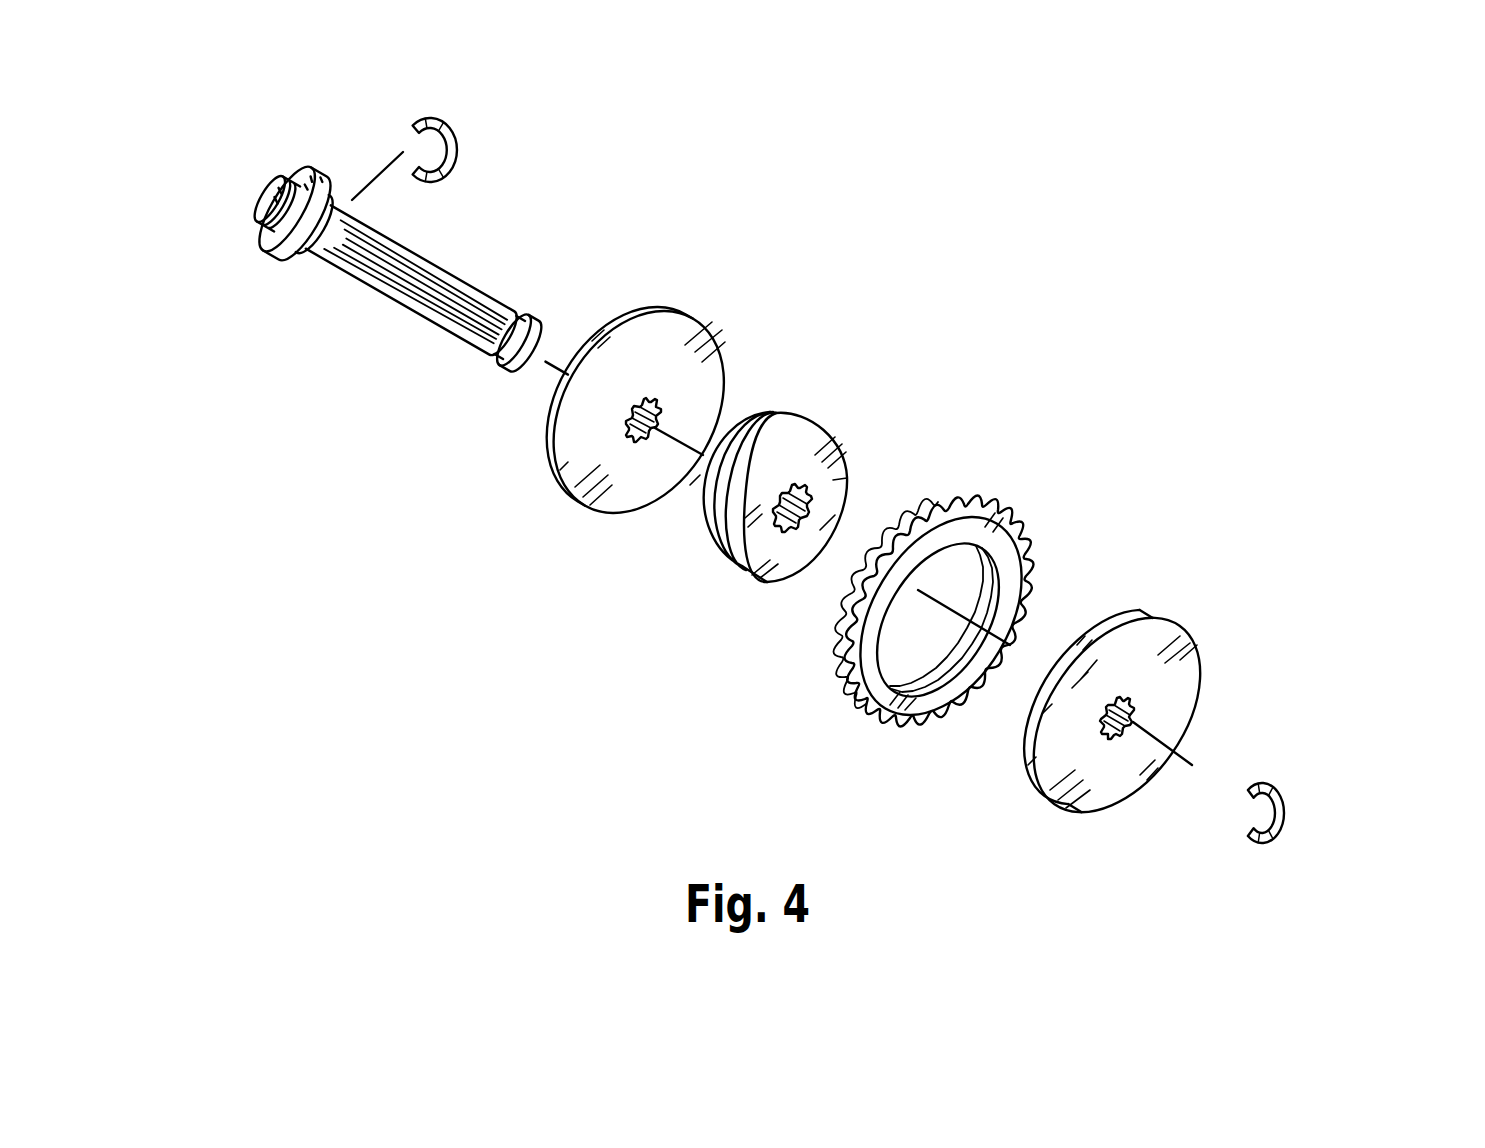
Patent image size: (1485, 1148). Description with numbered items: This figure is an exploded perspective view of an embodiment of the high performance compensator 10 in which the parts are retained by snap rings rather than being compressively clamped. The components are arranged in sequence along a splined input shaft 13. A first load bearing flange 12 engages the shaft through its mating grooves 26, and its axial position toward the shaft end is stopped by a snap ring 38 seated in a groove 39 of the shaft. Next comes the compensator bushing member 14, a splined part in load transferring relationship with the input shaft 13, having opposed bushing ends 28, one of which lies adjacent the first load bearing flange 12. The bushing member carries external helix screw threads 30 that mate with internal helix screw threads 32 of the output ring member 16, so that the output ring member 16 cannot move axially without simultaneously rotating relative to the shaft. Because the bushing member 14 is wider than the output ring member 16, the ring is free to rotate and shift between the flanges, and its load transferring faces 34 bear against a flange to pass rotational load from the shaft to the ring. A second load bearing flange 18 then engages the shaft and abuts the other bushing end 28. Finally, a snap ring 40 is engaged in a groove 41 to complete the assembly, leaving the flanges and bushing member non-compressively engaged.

The high performance compensator 10 is at (1264, 354).
The first load bearing flange 12 is at (706, 332).
The input shaft 13 is at (437, 266).
The compensator bushing member 14 is at (752, 577).
The output ring member 16 is at (984, 492).
The second load bearing flange 18 is at (1192, 630).
The mating grooves 26 is at (652, 432).
The opposed bushing ends 28 is at (748, 395).
The external helix screw threads 30 is at (787, 433).
The internal helix screw threads 32 is at (935, 668).
The load transferring faces 34 is at (1008, 560).
The snap ring 38 is at (457, 135).
The groove 39 is at (313, 257).
The snap ring 40 is at (1288, 797).
The groove 41 is at (498, 360).